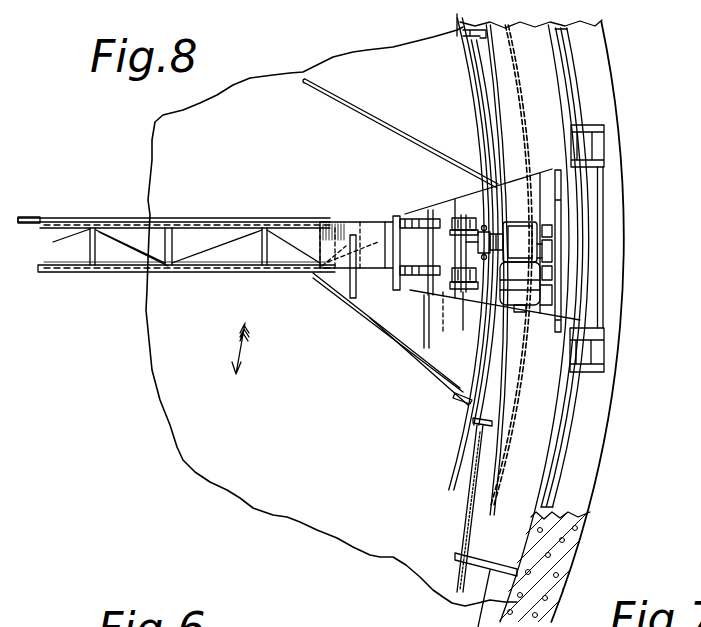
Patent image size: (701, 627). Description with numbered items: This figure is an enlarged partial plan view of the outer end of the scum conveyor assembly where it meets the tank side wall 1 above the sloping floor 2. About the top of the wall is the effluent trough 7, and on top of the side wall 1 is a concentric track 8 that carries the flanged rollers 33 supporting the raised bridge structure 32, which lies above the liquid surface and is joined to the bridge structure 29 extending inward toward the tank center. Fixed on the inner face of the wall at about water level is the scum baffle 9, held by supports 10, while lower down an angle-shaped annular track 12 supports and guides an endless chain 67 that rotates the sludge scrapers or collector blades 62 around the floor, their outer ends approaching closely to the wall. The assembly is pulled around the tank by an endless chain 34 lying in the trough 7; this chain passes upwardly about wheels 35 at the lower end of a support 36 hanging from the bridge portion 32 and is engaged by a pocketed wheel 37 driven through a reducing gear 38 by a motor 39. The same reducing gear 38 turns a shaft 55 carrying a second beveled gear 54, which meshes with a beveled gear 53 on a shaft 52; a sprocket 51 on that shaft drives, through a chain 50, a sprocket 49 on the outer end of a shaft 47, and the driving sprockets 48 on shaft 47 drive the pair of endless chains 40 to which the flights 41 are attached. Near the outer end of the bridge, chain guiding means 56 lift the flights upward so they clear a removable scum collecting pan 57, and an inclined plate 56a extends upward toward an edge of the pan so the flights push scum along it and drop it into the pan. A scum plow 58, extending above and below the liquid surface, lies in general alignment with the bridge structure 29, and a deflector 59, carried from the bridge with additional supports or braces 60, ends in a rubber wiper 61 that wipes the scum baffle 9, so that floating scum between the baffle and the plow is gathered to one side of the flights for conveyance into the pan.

The side wall 1 is at (607, 442).
The bottom or floor 2 is at (177, 423).
The effluent trough 7 is at (533, 468).
The track 8 is at (578, 75).
The scum baffle 9 is at (475, 82).
The supports 10 is at (473, 45).
The annular track 12 is at (480, 522).
The bridge structure 29 is at (80, 222).
The raised bridge structure 32 is at (528, 181).
The flanged rollers 33 is at (604, 343).
The endless chain 34 is at (515, 55).
The wheels 35 is at (552, 213).
The support 36 is at (560, 200).
The pocketed wheel 37 is at (553, 247).
The reducing gear 38 is at (520, 242).
The motor 39 is at (533, 303).
The endless chains 40 is at (110, 224).
The flights 41 is at (170, 228).
The shaft 47 is at (428, 255).
The driving sprockets 48 is at (420, 219).
The sprocket 49 is at (425, 298).
The chain 50 is at (443, 293).
The sprocket 51 is at (463, 295).
The shaft 52 is at (467, 258).
The beveled gear 53 is at (458, 216).
The second beveled gear 54 is at (482, 258).
The shaft 55 is at (495, 242).
The chain guiding means 56 is at (333, 222).
The inclined plate 56a is at (322, 268).
The scum collecting pan 57 is at (395, 218).
The scum plow 58 is at (22, 217).
The deflector 59 is at (440, 376).
The supports or braces 60 is at (352, 303).
The wiper 61 is at (470, 400).
The sludge scrapers or collector blades 62 is at (397, 122).
The endless chain 67 is at (490, 532).